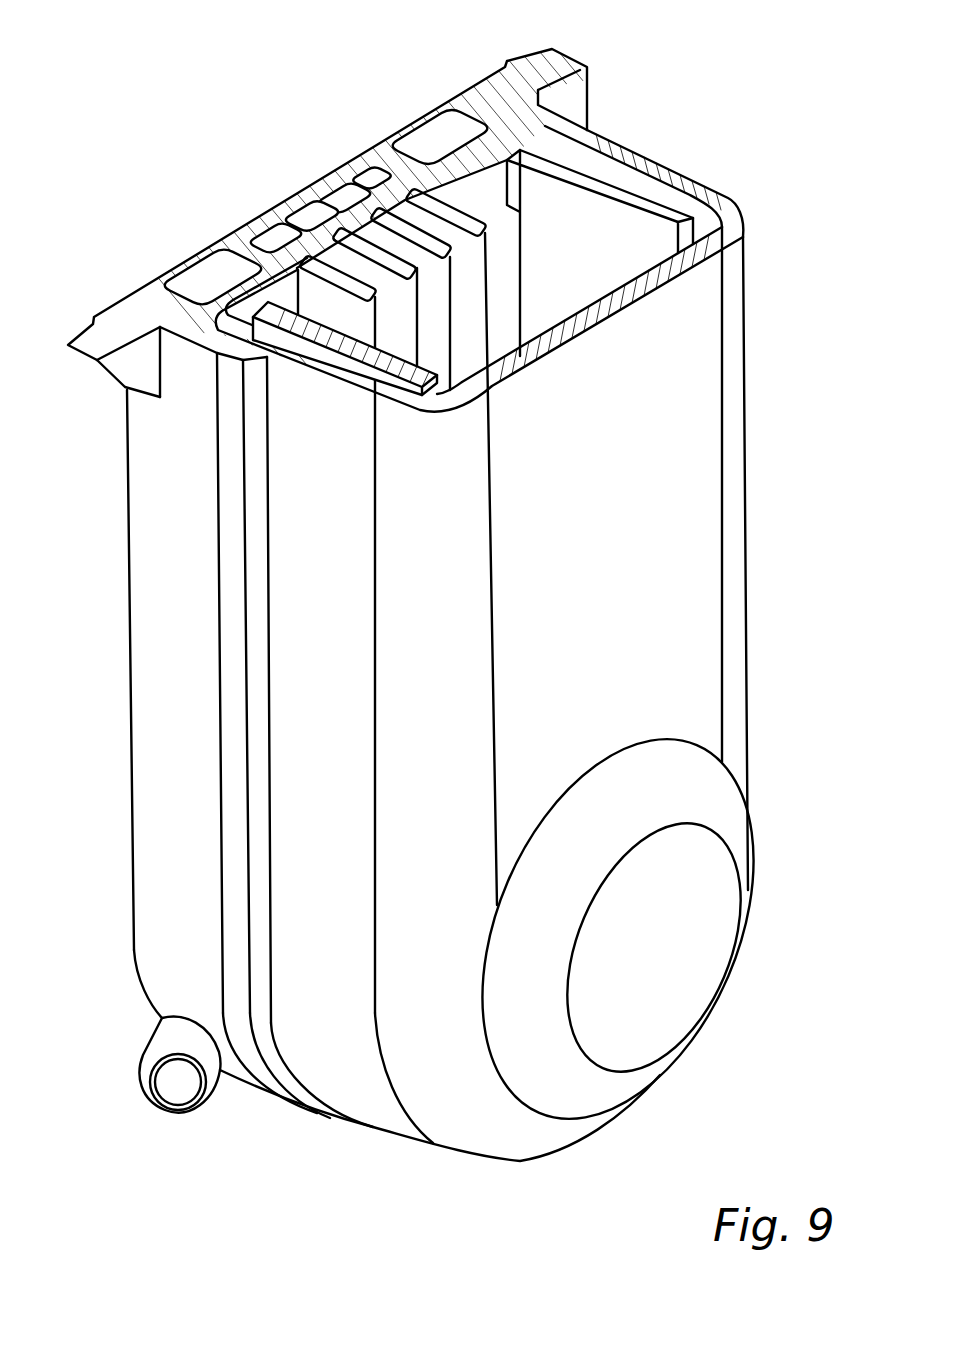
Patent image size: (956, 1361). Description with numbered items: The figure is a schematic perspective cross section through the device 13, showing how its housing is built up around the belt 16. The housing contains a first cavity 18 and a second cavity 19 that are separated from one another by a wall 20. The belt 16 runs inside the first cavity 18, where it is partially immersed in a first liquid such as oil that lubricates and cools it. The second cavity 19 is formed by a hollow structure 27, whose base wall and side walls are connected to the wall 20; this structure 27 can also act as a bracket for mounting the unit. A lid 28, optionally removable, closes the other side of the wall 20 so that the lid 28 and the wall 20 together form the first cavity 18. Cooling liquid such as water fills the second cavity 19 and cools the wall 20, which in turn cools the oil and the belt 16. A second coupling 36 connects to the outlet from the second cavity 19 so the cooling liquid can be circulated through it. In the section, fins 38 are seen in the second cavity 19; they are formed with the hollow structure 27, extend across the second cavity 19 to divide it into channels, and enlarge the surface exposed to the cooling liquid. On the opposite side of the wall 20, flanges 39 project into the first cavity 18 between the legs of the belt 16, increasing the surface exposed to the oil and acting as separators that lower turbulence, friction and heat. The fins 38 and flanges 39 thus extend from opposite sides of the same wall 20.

The device 13 is at (685, 58).
The belt 16 is at (580, 182).
The first cavity 18 is at (655, 201).
The second cavity 19 is at (432, 135).
The wall 20 is at (233, 289).
The structure 27 is at (137, 310).
The lid 28 is at (703, 372).
The second coupling 36 is at (182, 1092).
The fins 38 is at (292, 229).
The flanges 39 is at (507, 253).